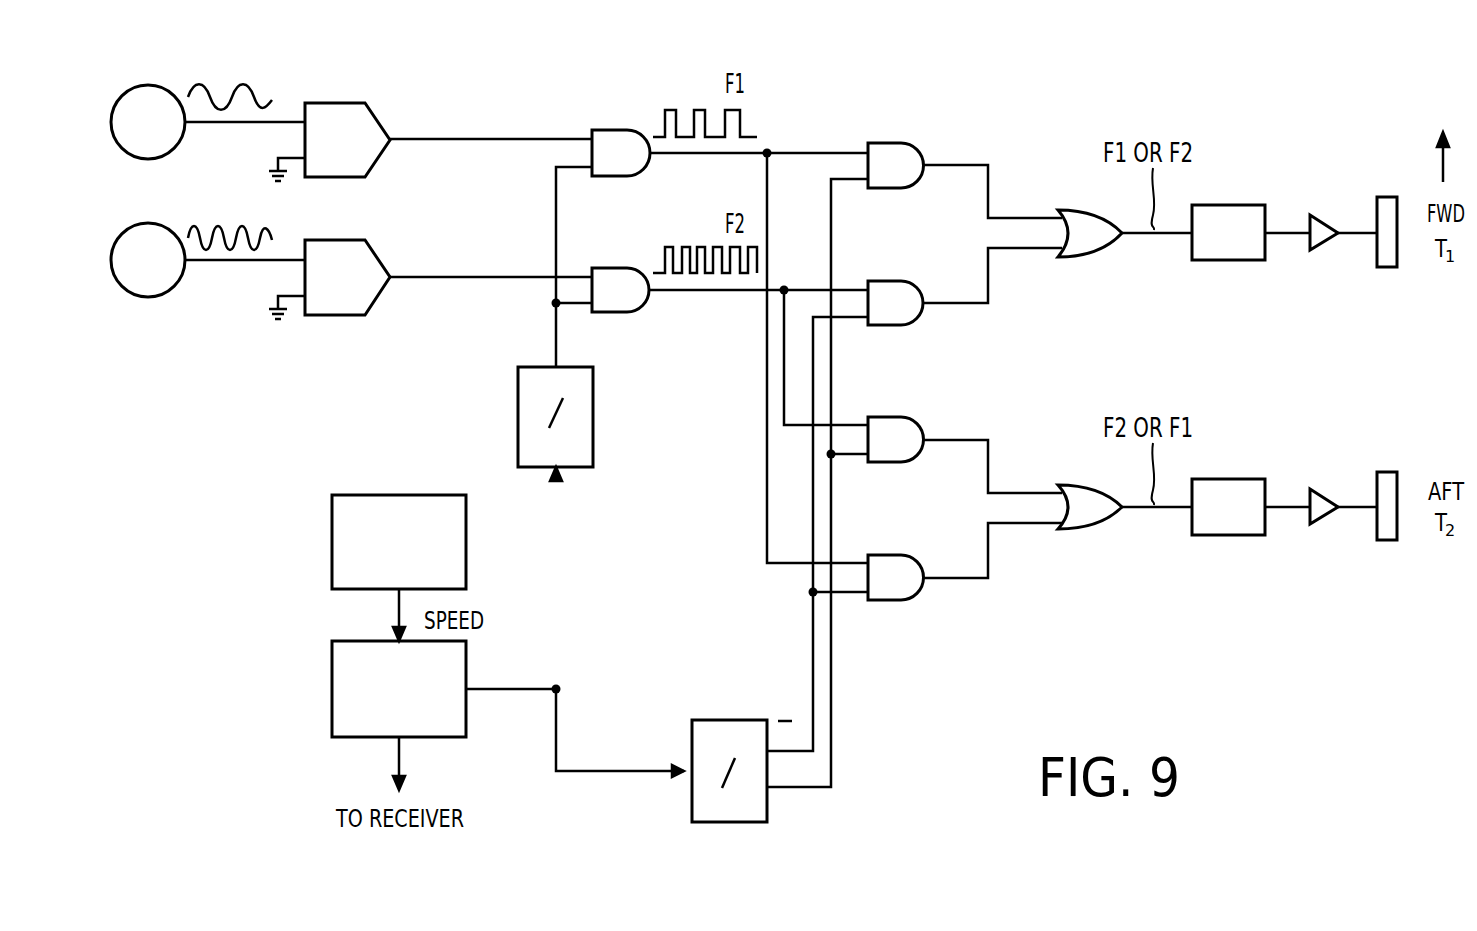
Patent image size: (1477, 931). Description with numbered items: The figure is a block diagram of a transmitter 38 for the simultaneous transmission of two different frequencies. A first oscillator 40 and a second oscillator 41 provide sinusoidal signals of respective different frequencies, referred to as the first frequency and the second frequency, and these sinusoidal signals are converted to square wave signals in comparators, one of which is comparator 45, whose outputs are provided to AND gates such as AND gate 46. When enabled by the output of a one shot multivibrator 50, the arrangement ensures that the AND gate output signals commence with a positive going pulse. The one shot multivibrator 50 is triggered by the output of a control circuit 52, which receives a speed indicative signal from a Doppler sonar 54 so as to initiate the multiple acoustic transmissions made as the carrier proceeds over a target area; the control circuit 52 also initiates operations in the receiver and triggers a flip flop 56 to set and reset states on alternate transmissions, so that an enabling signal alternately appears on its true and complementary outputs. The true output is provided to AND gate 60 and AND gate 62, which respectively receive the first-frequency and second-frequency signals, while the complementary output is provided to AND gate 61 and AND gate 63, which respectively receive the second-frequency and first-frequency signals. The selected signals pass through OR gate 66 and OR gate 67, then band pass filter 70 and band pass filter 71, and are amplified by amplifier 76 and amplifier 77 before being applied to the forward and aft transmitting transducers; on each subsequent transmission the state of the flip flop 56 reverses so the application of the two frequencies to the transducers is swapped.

The transmitter 38 is at (847, 81).
The first oscillator 40 is at (155, 86).
The second oscillator 41 is at (155, 224).
The comparator 45 is at (345, 240).
The AND gate 46 is at (335, 103).
The one shot multivibrator 50 is at (593, 403).
The control circuit 52 is at (332, 671).
The Doppler sonar 54 is at (332, 545).
The flip flop 56 is at (742, 720).
The AND gate 60 is at (880, 143).
The AND gate 61 is at (878, 281).
The AND gate 62 is at (880, 417).
The AND gate 63 is at (878, 555).
The OR gate 66 is at (1110, 210).
The OR gate 67 is at (1110, 485).
The band pass filter 70 is at (1208, 205).
The band pass filter 71 is at (1208, 479).
The amplifier 76 is at (1323, 217).
The amplifier 77 is at (1323, 490).